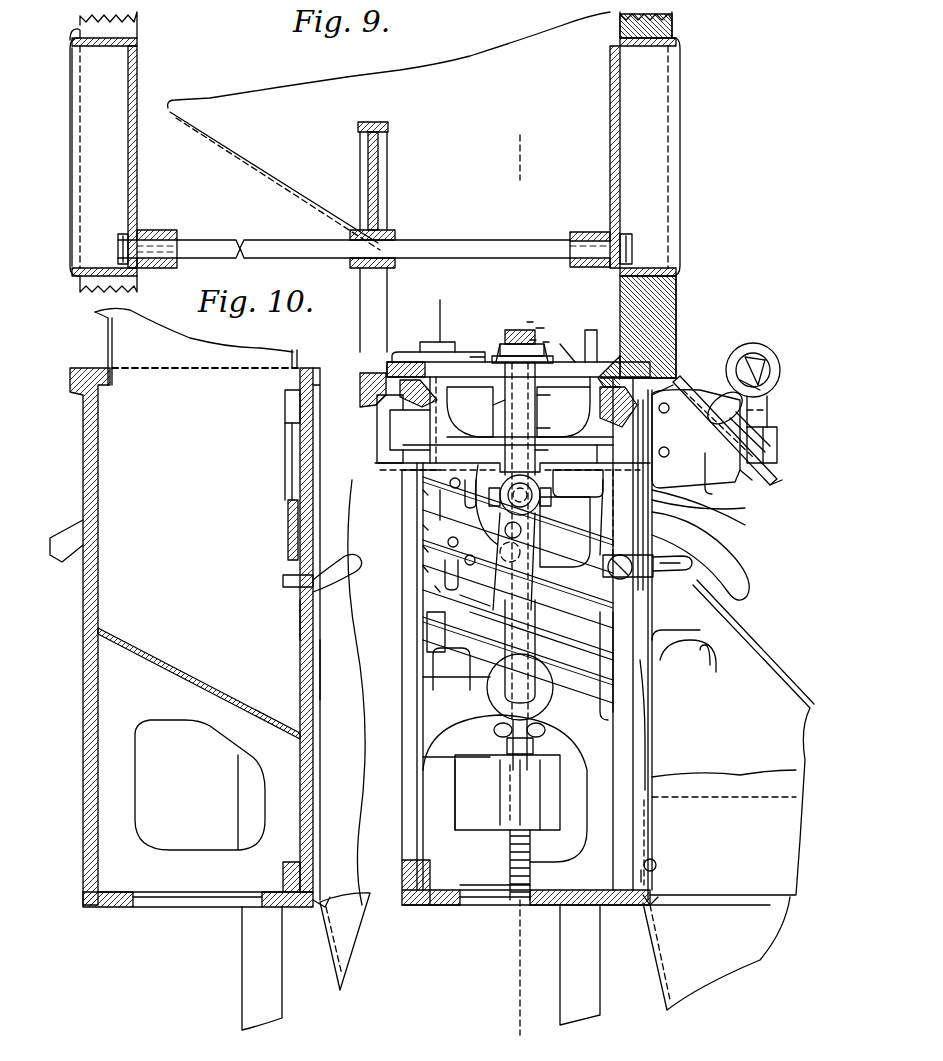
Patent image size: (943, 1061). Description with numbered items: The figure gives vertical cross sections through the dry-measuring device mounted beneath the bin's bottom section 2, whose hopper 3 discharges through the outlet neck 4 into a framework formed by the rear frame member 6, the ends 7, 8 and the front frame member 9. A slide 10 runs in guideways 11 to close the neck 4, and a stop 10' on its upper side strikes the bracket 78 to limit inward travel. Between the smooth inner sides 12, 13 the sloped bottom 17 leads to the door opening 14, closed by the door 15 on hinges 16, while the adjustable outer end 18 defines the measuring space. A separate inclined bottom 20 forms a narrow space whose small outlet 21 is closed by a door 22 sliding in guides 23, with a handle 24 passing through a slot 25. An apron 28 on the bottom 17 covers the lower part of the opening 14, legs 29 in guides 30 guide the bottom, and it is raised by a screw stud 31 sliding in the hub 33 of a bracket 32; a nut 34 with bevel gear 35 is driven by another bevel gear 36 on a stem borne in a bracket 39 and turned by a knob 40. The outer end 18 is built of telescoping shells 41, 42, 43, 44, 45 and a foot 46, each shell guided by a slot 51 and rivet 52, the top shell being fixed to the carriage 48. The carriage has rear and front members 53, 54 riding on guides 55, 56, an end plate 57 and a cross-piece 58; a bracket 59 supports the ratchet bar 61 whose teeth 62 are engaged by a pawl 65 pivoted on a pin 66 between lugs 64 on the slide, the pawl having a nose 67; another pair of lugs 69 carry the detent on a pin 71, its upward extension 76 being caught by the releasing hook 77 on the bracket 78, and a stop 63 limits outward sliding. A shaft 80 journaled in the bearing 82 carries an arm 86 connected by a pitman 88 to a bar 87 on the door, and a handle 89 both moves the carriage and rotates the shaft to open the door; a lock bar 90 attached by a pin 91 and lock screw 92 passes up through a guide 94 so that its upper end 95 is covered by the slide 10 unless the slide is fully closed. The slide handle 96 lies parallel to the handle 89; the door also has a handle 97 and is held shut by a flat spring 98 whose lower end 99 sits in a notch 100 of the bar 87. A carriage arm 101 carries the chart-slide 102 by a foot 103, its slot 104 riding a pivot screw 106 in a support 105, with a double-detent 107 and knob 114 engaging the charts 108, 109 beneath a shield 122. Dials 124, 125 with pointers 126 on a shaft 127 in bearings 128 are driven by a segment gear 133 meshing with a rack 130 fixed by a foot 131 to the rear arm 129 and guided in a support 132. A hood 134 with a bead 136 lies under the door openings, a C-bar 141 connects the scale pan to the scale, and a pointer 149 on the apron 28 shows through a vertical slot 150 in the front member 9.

In FIG. 9, the bottom section 2 is at (690, 300).
In FIG. 9, the hopper 3 is at (500, 70).
In FIG. 10, the hopper 3 is at (95, 312).
In FIG. 9, the outlet neck 4 is at (460, 342).
In FIG. 10, the outlet neck 4 is at (114, 358).
In FIG. 9, the rear frame member 6 is at (417, 512).
In FIG. 10, the rear frame member 6 is at (84, 455).
In FIG. 9, the end 7 is at (514, 583).
In FIG. 9, the inner end 8 is at (480, 905).
In FIG. 10, the inner end 8 is at (160, 742).
In FIG. 9, the front frame member 9 is at (653, 610).
In FIG. 10, the front frame member 9 is at (300, 468).
In FIG. 9, the slide 10 is at (587, 328).
In FIG. 9, the stop 10' is at (566, 318).
In FIG. 9, the guideways 11 is at (432, 385).
In FIG. 9, the smooth inner side 12 is at (423, 548).
In FIG. 10, the smooth inner side 12 is at (100, 548).
In FIG. 9, the smooth inner side 13 is at (648, 662).
In FIG. 9, the door opening 14 is at (650, 720).
In FIG. 9, the door 15 is at (662, 630).
In FIG. 9, the hinges 16 is at (720, 512).
In FIG. 9, the bottom 17 is at (440, 630).
In FIG. 9, the adjustable outer end 18 is at (435, 588).
In FIG. 10, the bottom 20 is at (160, 650).
In FIG. 10, the small outlet 21 is at (322, 680).
In FIG. 10, the door 22 is at (299, 628).
In FIG. 10, the guides 23 is at (293, 485).
In FIG. 9, the handle 24 is at (676, 568).
In FIG. 10, the handle 24 is at (320, 600).
In FIG. 10, the slot 25 is at (288, 546).
In FIG. 9, the apron 28 is at (648, 802).
In FIG. 9, the legs 29 is at (500, 790).
In FIG. 9, the guides 30 is at (495, 810).
In FIG. 9, the screw stud 31 is at (518, 905).
In FIG. 9, the bracket 32 is at (445, 905).
In FIG. 9, the hub 33 is at (540, 810).
In FIG. 9, the nut 34 is at (507, 742).
In FIG. 9, the bevel gear 35 is at (546, 730).
In FIG. 9, the bevel gear 36 is at (480, 716).
In FIG. 9, the bracket 39 is at (472, 680).
In FIG. 9, the knob 40 is at (487, 688).
In FIG. 9, the shell 41 is at (640, 555).
In FIG. 9, the shell 42 is at (417, 470).
In FIG. 9, the shell 43 is at (423, 492).
In FIG. 9, the shell 44 is at (423, 525).
In FIG. 9, the shell 45 is at (423, 568).
In FIG. 9, the foot 46 is at (427, 614).
In FIG. 9, the carriage 48 is at (676, 388).
In FIG. 9, the slot 51 is at (400, 690).
In FIG. 9, the rivet 52 is at (446, 558).
In FIG. 9, the rear member 53 is at (440, 300).
In FIG. 9, the front member 54 is at (670, 295).
In FIG. 9, the guide 55 is at (400, 425).
In FIG. 9, the guide 56 is at (581, 449).
In FIG. 9, the end plate 57 is at (603, 512).
In FIG. 9, the cross-piece 58 is at (508, 448).
In FIG. 9, the bracket 59 is at (546, 451).
In FIG. 9, the ratchet bar 61 is at (542, 419).
In FIG. 9, the ratchet teeth 62 is at (542, 397).
In FIG. 9, the stop 63 is at (515, 330).
In FIG. 9, the lugs 64 is at (500, 344).
In FIG. 9, the pawl 65 is at (470, 412).
In FIG. 9, the pin 66 is at (546, 344).
In FIG. 9, the nose 67 is at (533, 340).
In FIG. 9, the lugs 69 is at (546, 342).
In FIG. 9, the pin 71 is at (492, 362).
In FIG. 9, the upward extension 76 is at (540, 328).
In FIG. 9, the releasing hook 77 is at (530, 322).
In FIG. 9, the bracket 78 is at (592, 375).
In FIG. 9, the shaft 80 is at (565, 532).
In FIG. 9, the bearing 82 is at (512, 488).
In FIG. 9, the arm 86 is at (470, 586).
In FIG. 9, the bar 87 is at (685, 556).
In FIG. 9, the pitman 88 is at (560, 588).
In FIG. 9, the handle 89 is at (523, 670).
In FIG. 9, the lock bar 90 is at (563, 412).
In FIG. 9, the pin 91 is at (522, 538).
In FIG. 9, the lock screw 92 is at (520, 560).
In FIG. 9, the guide 94 is at (578, 483).
In FIG. 9, the upper end 95 is at (552, 356).
In FIG. 9, the handle 96 is at (493, 410).
In FIG. 9, the handle 97 is at (716, 672).
In FIG. 9, the flat spring 98 is at (730, 520).
In FIG. 9, the lower end 99 is at (740, 585).
In FIG. 9, the notch 100 is at (700, 592).
In FIG. 9, the arm 101 is at (700, 385).
In FIG. 9, the chart-slide 102 is at (778, 440).
In FIG. 9, the foot 103 is at (702, 439).
In FIG. 9, the slot 104 is at (765, 425).
In FIG. 9, the support 105 is at (722, 477).
In FIG. 9, the pivot screw 106 is at (778, 360).
In FIG. 9, the double-detent 107 is at (768, 398).
In FIG. 9, the chart 108 is at (718, 396).
In FIG. 9, the chart 109 is at (752, 482).
In FIG. 9, the knob 114 is at (765, 382).
In FIG. 9, the shield 122 is at (778, 480).
In FIG. 9, the dial 124 is at (618, 155).
In FIG. 9, the dial 125 is at (128, 180).
In FIG. 9, the pointer 126 is at (122, 234).
In FIG. 9, the shaft 127 is at (416, 238).
In FIG. 9, the bearings 128 is at (160, 212).
In FIG. 9, the arm 129 is at (380, 460).
In FIG. 9, the rack 130 is at (362, 372).
In FIG. 9, the foot 131 is at (378, 420).
In FIG. 9, the support 132 is at (374, 395).
In FIG. 9, the segment gear 133 is at (380, 170).
In FIG. 9, the hood 134 is at (668, 958).
In FIG. 10, the hood 134 is at (340, 968).
In FIG. 9, the bead 136 is at (652, 898).
In FIG. 10, the bead 136 is at (330, 904).
In FIG. 9, the C-bar 141 is at (572, 986).
In FIG. 10, the C-bar 141 is at (242, 957).
In FIG. 9, the pointer 149 is at (656, 862).
In FIG. 9, the vertical slot 150 is at (652, 800).